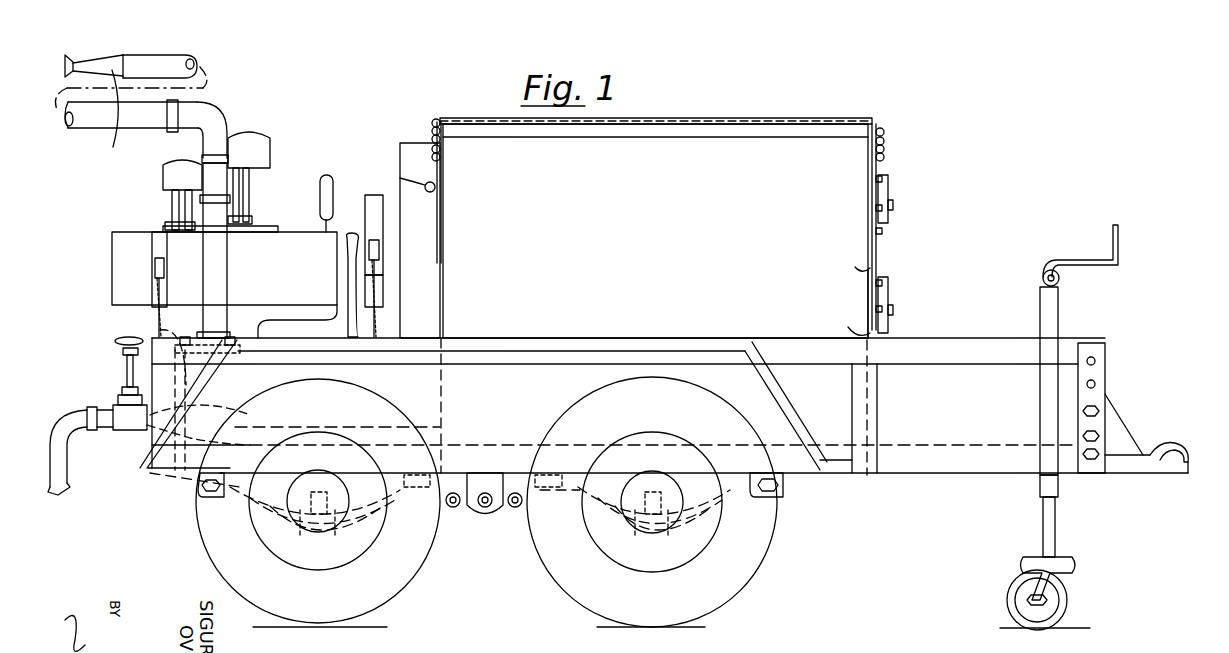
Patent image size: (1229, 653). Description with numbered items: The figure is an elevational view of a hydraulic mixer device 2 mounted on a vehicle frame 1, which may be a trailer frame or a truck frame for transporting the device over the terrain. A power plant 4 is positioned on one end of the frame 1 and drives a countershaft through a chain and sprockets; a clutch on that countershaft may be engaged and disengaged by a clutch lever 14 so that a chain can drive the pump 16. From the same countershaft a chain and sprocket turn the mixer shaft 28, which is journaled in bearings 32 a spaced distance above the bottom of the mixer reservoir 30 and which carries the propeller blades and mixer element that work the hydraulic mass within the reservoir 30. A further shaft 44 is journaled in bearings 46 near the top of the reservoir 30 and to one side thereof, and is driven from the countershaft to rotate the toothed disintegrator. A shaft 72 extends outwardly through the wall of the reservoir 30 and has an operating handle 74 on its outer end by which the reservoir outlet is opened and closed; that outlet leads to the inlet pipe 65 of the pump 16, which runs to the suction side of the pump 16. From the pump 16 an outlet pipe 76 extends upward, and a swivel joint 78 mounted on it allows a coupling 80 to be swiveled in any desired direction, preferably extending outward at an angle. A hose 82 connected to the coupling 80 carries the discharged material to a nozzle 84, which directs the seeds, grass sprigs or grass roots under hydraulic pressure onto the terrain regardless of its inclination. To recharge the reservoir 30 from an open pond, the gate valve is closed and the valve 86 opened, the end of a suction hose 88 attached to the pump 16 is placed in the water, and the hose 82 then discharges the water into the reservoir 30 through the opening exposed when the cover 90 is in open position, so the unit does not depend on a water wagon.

The vehicle frame 1 is at (928, 486).
The hydraulic mixer device 2 is at (757, 113).
The power plant 4 is at (133, 222).
The clutch lever 14 is at (337, 247).
The pump 16 is at (127, 452).
The mixer shaft 28 is at (893, 312).
The mixer reservoir 30 is at (870, 268).
The bearings 32 is at (888, 295).
The shaft 44 is at (893, 207).
The bearings 46 is at (888, 190).
The inlet pipe 65 is at (417, 510).
The shaft 72 is at (418, 183).
The operating handle 74 is at (425, 192).
The outlet pipe 76 is at (218, 267).
The swivel joint 78 is at (222, 183).
The coupling 80 is at (217, 118).
The hose 82 is at (93, 125).
The nozzle 84 is at (116, 118).
The valve 86 is at (122, 378).
The suction hose 88 is at (67, 483).
The cover 90 is at (833, 130).